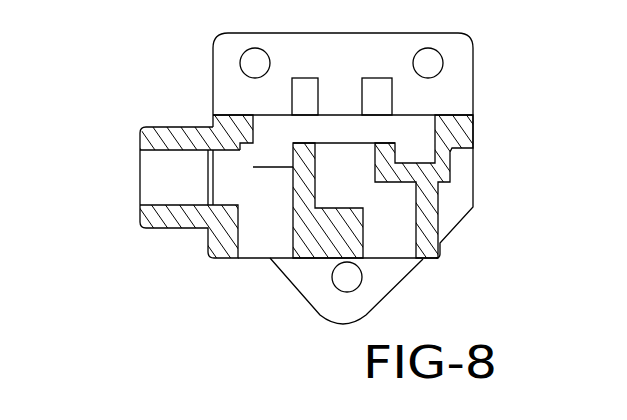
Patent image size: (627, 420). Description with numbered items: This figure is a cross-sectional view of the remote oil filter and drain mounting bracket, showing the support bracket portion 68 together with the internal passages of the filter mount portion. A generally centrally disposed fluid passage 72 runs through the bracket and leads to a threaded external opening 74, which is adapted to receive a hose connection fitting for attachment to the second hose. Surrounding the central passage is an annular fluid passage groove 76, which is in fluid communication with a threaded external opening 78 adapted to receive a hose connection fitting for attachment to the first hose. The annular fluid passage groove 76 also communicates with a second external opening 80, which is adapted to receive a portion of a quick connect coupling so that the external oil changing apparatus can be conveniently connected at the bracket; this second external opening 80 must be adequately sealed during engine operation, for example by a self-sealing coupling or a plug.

The support bracket portion 68 is at (477, 56).
The fluid passage 72 is at (356, 154).
The threaded external opening 74 is at (403, 268).
The annular fluid passage groove 76 is at (257, 133).
The threaded external opening 78 is at (266, 281).
The second external opening 80 is at (112, 170).